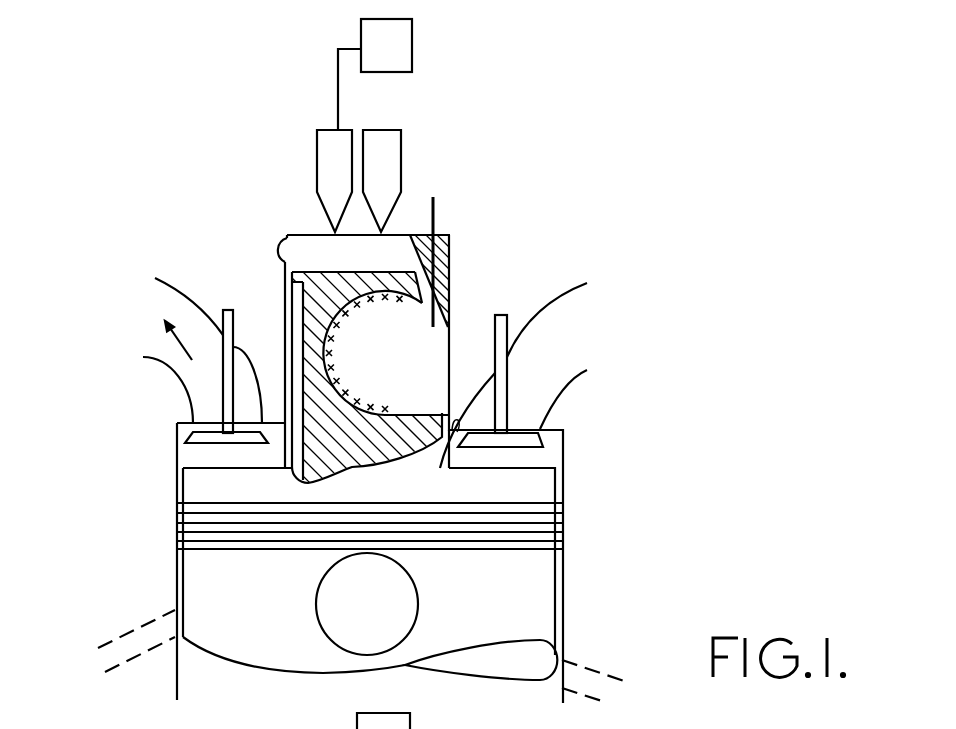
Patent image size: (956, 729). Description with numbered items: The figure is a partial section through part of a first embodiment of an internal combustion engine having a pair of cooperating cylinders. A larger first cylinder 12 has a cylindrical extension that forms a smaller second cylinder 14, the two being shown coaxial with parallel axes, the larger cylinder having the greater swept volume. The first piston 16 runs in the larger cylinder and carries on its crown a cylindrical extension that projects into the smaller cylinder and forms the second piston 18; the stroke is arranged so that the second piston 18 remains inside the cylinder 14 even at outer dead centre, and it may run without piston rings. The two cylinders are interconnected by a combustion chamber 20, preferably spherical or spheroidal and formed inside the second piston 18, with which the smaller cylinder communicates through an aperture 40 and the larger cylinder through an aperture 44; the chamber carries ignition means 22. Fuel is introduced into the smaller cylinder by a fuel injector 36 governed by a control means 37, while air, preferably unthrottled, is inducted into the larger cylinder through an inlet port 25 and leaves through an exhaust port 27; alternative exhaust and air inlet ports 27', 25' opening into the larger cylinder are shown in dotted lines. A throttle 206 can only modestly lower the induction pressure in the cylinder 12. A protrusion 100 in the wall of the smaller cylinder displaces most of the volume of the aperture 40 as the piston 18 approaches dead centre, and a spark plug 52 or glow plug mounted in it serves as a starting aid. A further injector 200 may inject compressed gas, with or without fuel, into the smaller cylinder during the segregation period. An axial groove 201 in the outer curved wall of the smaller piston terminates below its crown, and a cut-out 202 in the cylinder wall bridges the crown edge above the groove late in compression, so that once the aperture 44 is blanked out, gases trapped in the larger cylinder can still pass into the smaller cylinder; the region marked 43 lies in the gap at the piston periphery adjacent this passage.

The first cylinder 12 is at (548, 452).
The second cylinder 14 is at (345, 268).
The first piston 16 is at (525, 600).
The second piston 18 is at (310, 250).
The combustion chamber 20 is at (368, 358).
The ignition means 22 is at (357, 402).
The inlet port 25 is at (558, 343).
The alternative air inlet port 25' is at (602, 657).
The exhaust port 27 is at (183, 354).
The alternative exhaust port 27' is at (136, 626).
The fuel injector 36 is at (332, 151).
The control means 37 is at (394, 51).
The aperture 40 is at (424, 278).
The gap passage 43 is at (457, 425).
The aperture 44 is at (440, 402).
The spark plug 52 is at (435, 203).
The protrusion 100 is at (440, 250).
The injector 200 is at (378, 154).
The axial groove 201 is at (307, 308).
The cut-out 202 is at (268, 248).
The throttle 206 is at (545, 383).